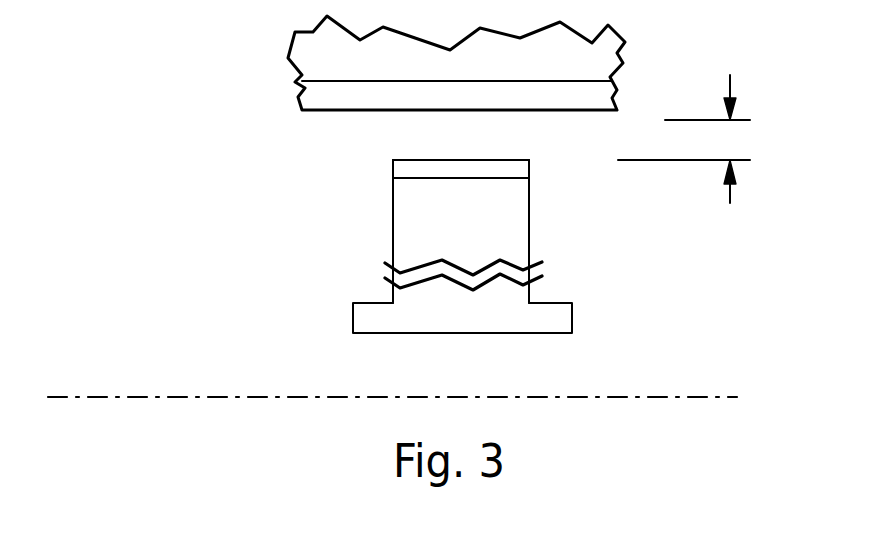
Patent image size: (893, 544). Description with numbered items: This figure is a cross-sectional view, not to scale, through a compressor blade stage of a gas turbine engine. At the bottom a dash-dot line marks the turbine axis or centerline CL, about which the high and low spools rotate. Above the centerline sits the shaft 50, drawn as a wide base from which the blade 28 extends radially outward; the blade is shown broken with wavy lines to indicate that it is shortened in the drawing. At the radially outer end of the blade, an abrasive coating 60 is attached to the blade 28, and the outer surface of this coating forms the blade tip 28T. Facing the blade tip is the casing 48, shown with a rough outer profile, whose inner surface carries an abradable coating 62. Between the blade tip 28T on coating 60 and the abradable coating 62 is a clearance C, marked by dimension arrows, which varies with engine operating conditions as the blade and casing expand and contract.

The casing 48 is at (329, 63).
The abradable coating 62 is at (392, 100).
The abrasive coating 60 is at (508, 163).
The blade tip 28T is at (425, 158).
The blade 28 is at (413, 236).
The shaft 50 is at (373, 316).
The clearance c is at (693, 135).
The turbine axis (centerline) CL is at (182, 397).